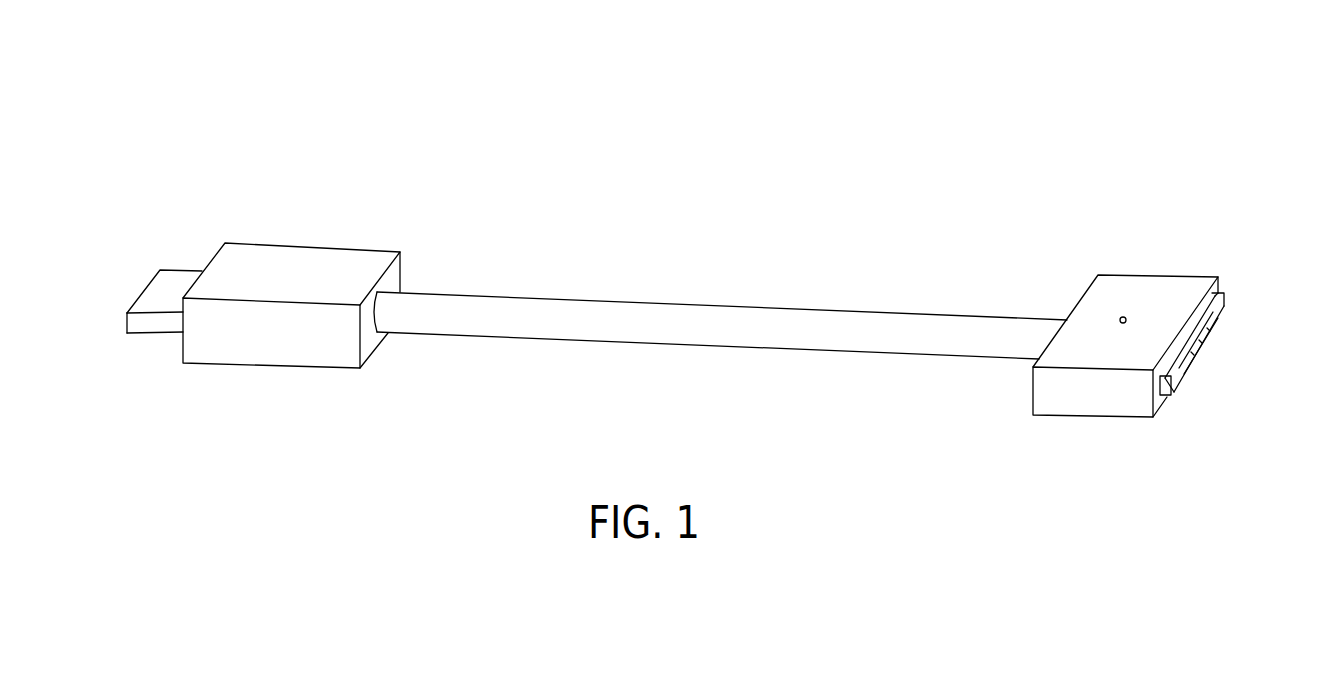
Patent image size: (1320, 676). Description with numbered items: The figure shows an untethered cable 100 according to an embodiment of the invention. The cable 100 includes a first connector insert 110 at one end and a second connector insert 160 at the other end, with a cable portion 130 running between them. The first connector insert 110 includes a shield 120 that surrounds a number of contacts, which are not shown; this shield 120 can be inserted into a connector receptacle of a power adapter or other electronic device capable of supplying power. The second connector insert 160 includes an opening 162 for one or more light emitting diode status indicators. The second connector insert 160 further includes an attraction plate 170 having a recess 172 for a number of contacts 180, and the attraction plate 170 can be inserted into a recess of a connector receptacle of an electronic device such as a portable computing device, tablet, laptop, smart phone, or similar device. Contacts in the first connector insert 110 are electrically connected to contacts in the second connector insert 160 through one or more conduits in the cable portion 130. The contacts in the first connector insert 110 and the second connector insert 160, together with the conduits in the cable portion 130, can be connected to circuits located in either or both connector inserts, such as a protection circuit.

The cable 100 is at (1221, 69).
The first connector insert 110 is at (300, 268).
The shield 120 is at (147, 340).
The cable portion 130 is at (745, 318).
The second connector insert 160 is at (1153, 288).
The opening 162 is at (1122, 316).
The attraction plate 170 is at (1178, 387).
The recess 172 is at (1204, 340).
The contacts 180 is at (1219, 320).